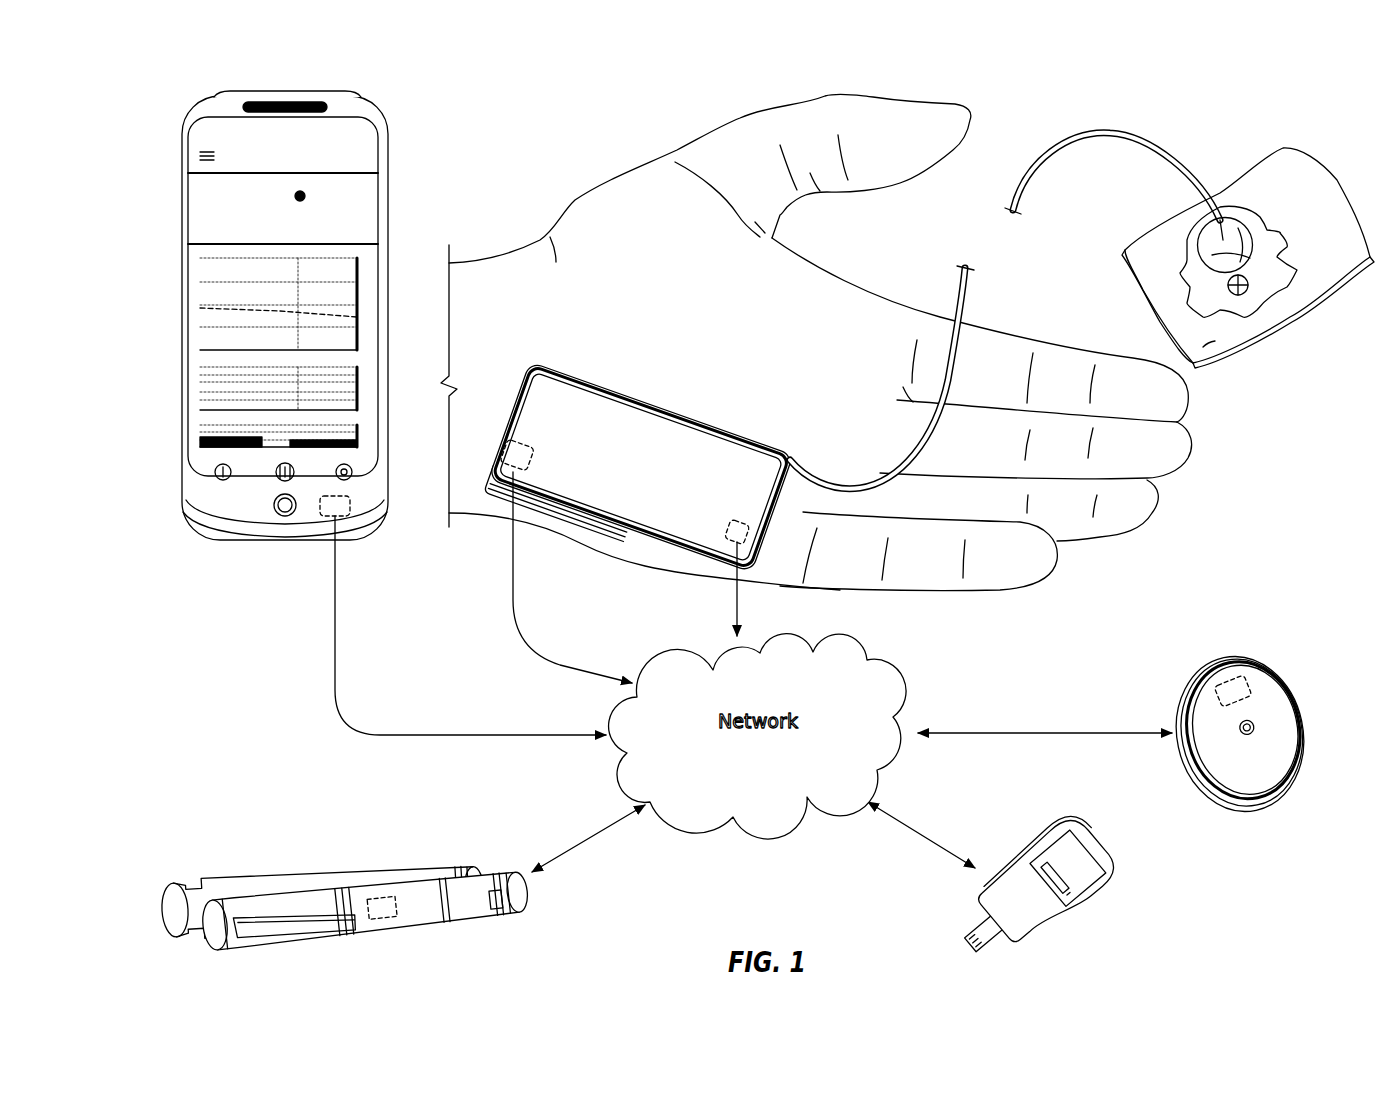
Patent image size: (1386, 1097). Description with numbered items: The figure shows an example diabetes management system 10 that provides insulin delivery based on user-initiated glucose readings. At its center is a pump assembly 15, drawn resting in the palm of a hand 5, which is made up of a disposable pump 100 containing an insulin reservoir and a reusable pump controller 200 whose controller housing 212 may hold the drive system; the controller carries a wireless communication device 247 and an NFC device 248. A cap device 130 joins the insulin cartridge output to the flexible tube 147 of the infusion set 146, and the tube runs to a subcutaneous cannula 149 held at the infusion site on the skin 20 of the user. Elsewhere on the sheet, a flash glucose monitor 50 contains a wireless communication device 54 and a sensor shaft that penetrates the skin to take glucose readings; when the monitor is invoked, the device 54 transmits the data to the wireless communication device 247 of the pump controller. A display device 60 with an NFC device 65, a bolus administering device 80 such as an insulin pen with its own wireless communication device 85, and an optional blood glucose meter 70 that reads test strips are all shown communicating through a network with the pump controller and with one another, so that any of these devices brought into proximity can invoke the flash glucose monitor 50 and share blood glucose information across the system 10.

The diabetes management system 10 is at (477, 100).
The pump assembly 15 is at (535, 333).
The disposable pump 100 is at (690, 406).
The cap device 130 is at (792, 452).
The flexible tube 147 is at (870, 470).
The infusion set 146 is at (1311, 191).
The subcutaneous cannula 149 is at (1196, 243).
The skin 20 is at (1222, 330).
The NFC device 248 is at (511, 474).
The wireless communication device 247 is at (727, 560).
The hand 5 is at (580, 548).
The reusable pump controller 200 is at (663, 540).
The controller housing 212 is at (675, 545).
The display device 60 is at (388, 176).
The NFC device 65 is at (320, 516).
The bolus administering device 80 is at (503, 860).
The wireless communication device 85 is at (383, 893).
The blood glucose meter 70 is at (1084, 810).
The flash glucose monitor 50 is at (1256, 655).
The wireless communication device 54 is at (1224, 680).